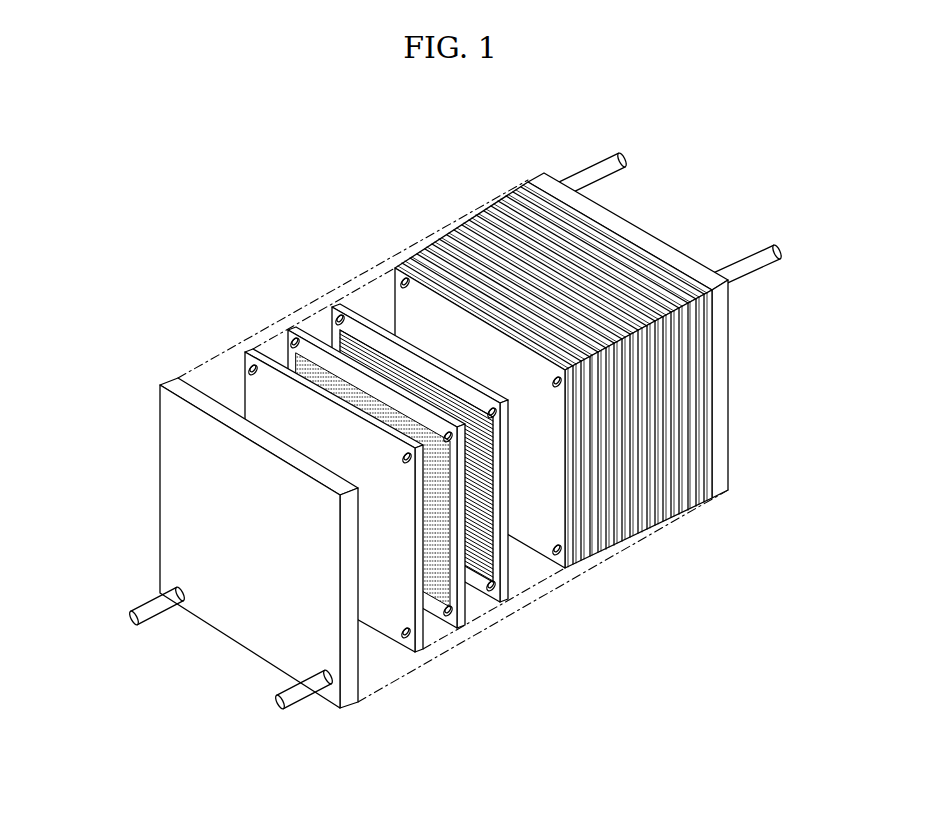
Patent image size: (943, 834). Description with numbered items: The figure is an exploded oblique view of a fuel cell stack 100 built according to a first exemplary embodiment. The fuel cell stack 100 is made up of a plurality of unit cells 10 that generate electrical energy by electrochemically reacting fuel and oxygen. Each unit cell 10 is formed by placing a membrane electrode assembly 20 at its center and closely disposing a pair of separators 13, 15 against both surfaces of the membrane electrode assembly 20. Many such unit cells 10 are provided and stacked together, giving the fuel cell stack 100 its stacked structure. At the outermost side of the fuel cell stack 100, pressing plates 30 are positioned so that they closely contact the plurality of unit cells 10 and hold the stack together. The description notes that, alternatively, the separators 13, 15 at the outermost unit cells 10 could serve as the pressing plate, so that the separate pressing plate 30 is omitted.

The fuel cell stack 100 is at (372, 175).
The unit cell 10 is at (571, 651).
The separator 13 is at (420, 633).
The membrane electrode assembly 20 is at (468, 609).
The separator 15 is at (512, 590).
The pressing plate 30 is at (653, 240).